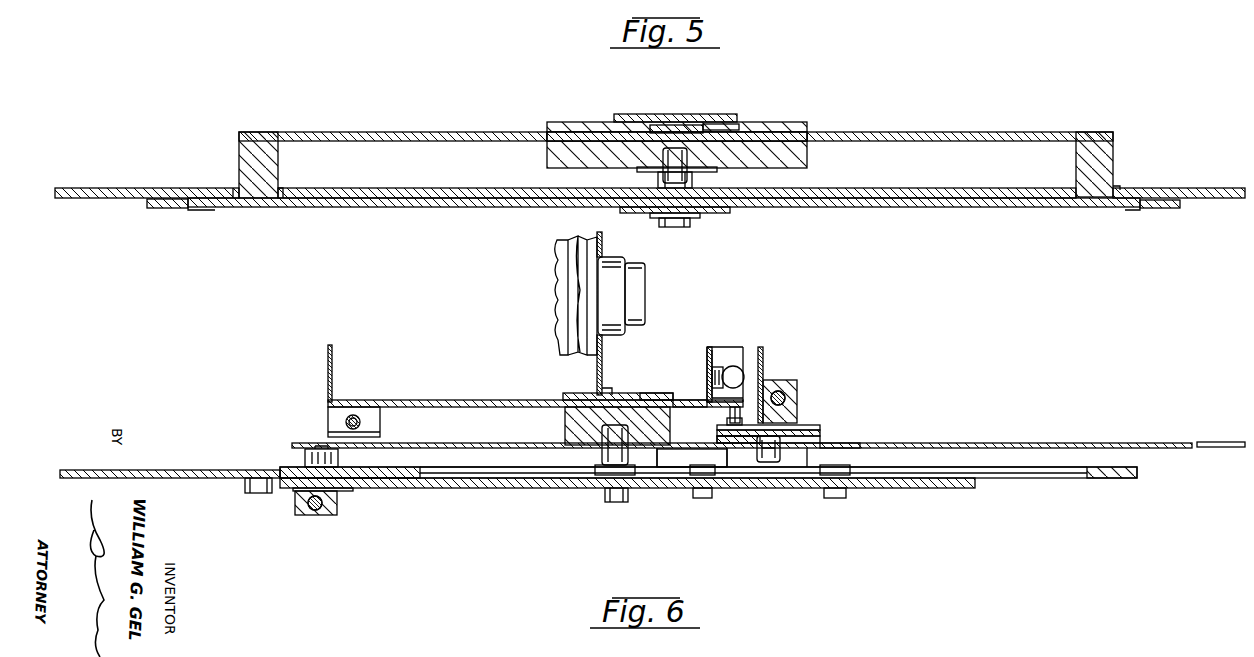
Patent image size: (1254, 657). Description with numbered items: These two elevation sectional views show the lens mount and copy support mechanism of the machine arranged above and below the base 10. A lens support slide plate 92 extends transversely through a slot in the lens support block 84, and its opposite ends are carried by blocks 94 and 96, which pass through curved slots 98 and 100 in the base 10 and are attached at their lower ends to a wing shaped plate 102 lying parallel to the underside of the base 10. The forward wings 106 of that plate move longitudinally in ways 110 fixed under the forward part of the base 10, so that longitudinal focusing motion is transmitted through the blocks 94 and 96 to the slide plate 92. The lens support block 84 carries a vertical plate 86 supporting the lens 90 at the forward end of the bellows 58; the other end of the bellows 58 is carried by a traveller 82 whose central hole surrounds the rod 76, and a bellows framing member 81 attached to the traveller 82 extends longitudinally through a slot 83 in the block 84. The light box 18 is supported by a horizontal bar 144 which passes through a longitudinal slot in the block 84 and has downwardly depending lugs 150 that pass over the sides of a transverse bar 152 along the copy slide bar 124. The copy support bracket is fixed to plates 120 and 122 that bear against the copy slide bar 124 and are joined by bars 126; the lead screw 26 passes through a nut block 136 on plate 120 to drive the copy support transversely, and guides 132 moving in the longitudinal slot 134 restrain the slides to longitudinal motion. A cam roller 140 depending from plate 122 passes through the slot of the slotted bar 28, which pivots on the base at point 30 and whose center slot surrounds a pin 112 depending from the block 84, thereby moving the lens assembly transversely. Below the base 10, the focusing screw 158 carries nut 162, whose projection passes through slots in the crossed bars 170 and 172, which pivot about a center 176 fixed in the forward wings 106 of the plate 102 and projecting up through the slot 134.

In FIG. 5, the base 10 is at (946, 192).
In FIG. 6, the base 10 is at (424, 468).
In FIG. 6, the light box 18 is at (700, 359).
In FIG. 6, the screw 26 is at (786, 399).
In FIG. 6, the slotted bar 28 is at (480, 444).
In FIG. 6, the pivot point 30 is at (305, 455).
In FIG. 6, the bellows 58 is at (557, 265).
In FIG. 6, the rod 76 is at (358, 415).
In FIG. 5, the bellows framing member 81 is at (692, 122).
In FIG. 6, the bellows framing member 81 is at (332, 358).
In FIG. 6, the traveller 82 is at (328, 418).
In FIG. 5, the slot 83 is at (738, 126).
In FIG. 6, the slot 83 is at (564, 396).
In FIG. 5, the lens support block 84 is at (808, 158).
In FIG. 6, the lens support block 84 is at (650, 395).
In FIG. 6, the vertical plate 86 is at (604, 246).
In FIG. 6, the lens 90 is at (604, 340).
In FIG. 5, the lens support slide plate 92 is at (394, 132).
In FIG. 6, the lens support slide plate 92 is at (572, 420).
In FIG. 5, the block 94 is at (239, 160).
In FIG. 5, the block 96 is at (1076, 160).
In FIG. 5, the curved slot 98 is at (1122, 186).
In FIG. 5, the curved slot 100 is at (292, 188).
In FIG. 5, the wing shaped plate 102 is at (305, 208).
In FIG. 6, the wing shaped plate 102 is at (426, 489).
In FIG. 5, the forward wings 106 is at (213, 210).
In FIG. 5, the ways 110 is at (160, 210).
In FIG. 5, the pin 112 is at (690, 160).
In FIG. 6, the pin 112 is at (602, 450).
In FIG. 6, the plate 120 is at (820, 432).
In FIG. 6, the plate 122 is at (840, 446).
In FIG. 6, the copy slide bar 124 is at (808, 426).
In FIG. 6, the bars 126 is at (820, 439).
In FIG. 6, the guides 132 is at (703, 498).
In FIG. 5, the longitudinal slot 134 is at (650, 186).
In FIG. 6, the nut block 136 is at (786, 380).
In FIG. 6, the cam roller 140 is at (782, 452).
In FIG. 5, the horizontal bar 144 is at (672, 126).
In FIG. 6, the horizontal bar 144 is at (676, 402).
In FIG. 6, the lugs 150 is at (730, 412).
In FIG. 6, the transverse bar 152 is at (733, 423).
In FIG. 6, the screw 158 is at (316, 517).
In FIG. 6, the nut 162 is at (262, 495).
In FIG. 5, the crossbar 170 is at (732, 212).
In FIG. 6, the crossbar 170 is at (372, 492).
In FIG. 5, the crossbar 172 is at (702, 218).
In FIG. 6, the crossbar 172 is at (580, 480).
In FIG. 5, the center 176 is at (668, 228).
In FIG. 6, the center 176 is at (620, 503).